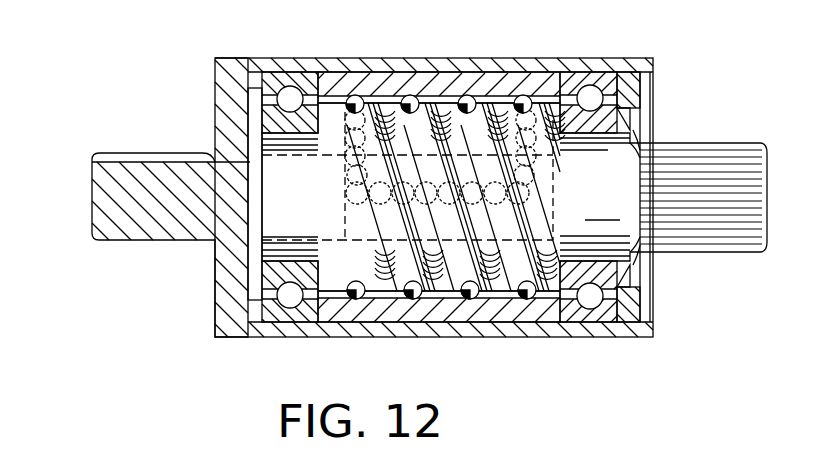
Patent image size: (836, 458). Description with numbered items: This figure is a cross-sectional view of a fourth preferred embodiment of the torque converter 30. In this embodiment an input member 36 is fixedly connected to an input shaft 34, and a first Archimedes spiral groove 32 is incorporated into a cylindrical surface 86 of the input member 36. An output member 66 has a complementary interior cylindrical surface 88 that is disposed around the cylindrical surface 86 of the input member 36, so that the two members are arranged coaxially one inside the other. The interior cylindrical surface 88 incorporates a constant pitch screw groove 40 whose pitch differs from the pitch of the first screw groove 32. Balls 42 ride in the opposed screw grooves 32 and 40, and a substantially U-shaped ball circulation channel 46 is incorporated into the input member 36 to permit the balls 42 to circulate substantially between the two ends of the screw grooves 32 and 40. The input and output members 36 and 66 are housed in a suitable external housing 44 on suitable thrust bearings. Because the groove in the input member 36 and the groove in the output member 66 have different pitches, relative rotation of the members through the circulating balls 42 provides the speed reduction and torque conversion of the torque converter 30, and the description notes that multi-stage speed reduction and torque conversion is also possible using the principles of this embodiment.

The torque converter 30 is at (549, 341).
The first Archimedes spiral groove 32 is at (388, 247).
The input shaft 34 is at (97, 196).
The input member 36 is at (335, 292).
The constant pitch screw groove 40 is at (520, 102).
The balls 42 is at (409, 96).
The external housing 44 is at (505, 67).
The ball circulation channel 46 is at (527, 150).
The output member 66 is at (460, 78).
The cylindrical surface 86 is at (433, 220).
The interior cylindrical surface 88 is at (357, 96).